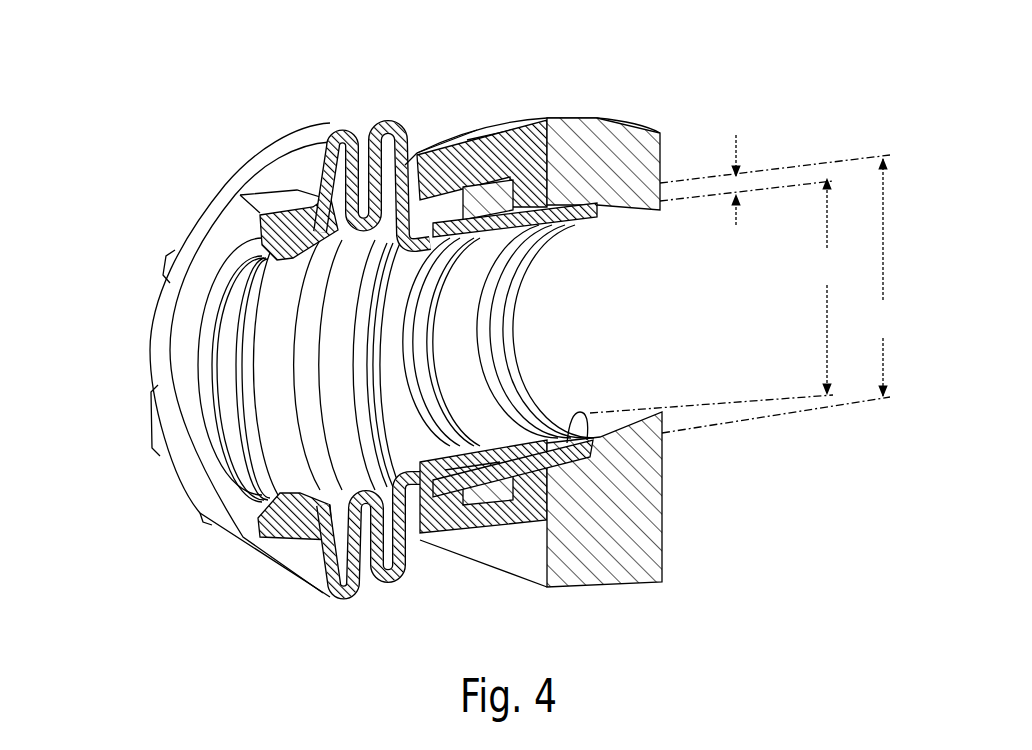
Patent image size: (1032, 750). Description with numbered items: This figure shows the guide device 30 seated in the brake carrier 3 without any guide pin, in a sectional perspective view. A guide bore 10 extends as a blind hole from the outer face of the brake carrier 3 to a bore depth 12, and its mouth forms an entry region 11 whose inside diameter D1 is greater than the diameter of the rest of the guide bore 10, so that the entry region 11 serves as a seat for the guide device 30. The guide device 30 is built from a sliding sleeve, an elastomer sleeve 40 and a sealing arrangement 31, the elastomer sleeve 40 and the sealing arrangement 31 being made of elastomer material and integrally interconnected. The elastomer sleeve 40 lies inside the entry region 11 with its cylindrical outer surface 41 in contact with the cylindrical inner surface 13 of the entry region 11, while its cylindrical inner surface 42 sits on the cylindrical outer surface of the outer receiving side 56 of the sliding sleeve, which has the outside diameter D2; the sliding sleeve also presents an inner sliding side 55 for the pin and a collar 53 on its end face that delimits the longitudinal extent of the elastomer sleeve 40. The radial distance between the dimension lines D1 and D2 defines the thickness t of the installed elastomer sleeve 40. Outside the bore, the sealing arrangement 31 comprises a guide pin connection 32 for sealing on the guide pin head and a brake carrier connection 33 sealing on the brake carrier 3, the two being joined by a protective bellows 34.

The brake carrier 3 is at (662, 180).
The guide bore 10 is at (620, 330).
The entry region 11 is at (518, 342).
The bore depth 12 is at (628, 275).
The cylindrical inner surface 13 is at (583, 462).
The guide device 30 is at (317, 347).
The sealing arrangement 31 is at (167, 477).
The guide pin connection 32 is at (272, 522).
The brake carrier connection 33 is at (517, 170).
The protective bellows 34 is at (335, 588).
The elastomer sleeve 40 is at (547, 207).
The cylindrical outer surface 41 is at (556, 447).
The cylindrical inner surface 42 is at (600, 458).
The collar 53 is at (430, 500).
The inner sliding side 55 is at (595, 398).
The outer receiving side 56 is at (505, 470).
The thickness t is at (737, 185).
The inside diameter D1 is at (883, 277).
The outside diameter D2 is at (825, 286).